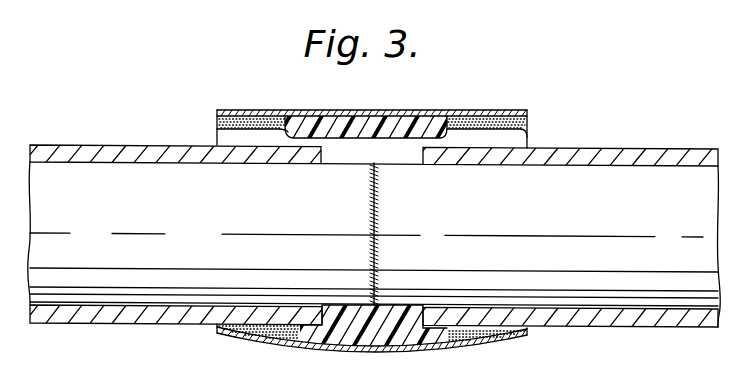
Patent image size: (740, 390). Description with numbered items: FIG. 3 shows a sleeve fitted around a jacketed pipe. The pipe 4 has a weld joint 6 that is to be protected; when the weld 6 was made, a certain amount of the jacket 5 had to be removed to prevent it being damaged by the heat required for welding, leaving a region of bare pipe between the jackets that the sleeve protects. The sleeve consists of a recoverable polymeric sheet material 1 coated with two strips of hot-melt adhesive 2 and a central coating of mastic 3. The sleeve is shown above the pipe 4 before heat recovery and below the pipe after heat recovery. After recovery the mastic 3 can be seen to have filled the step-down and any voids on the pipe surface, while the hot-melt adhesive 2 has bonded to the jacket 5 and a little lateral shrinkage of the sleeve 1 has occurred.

The recoverable polymeric sheet material 1 is at (294, 114).
The hot-melt adhesive 2 is at (240, 131).
The mastic 3 is at (410, 116).
The pipe 4 is at (85, 273).
The jacket 5 is at (90, 144).
The weld joint 6 is at (384, 211).